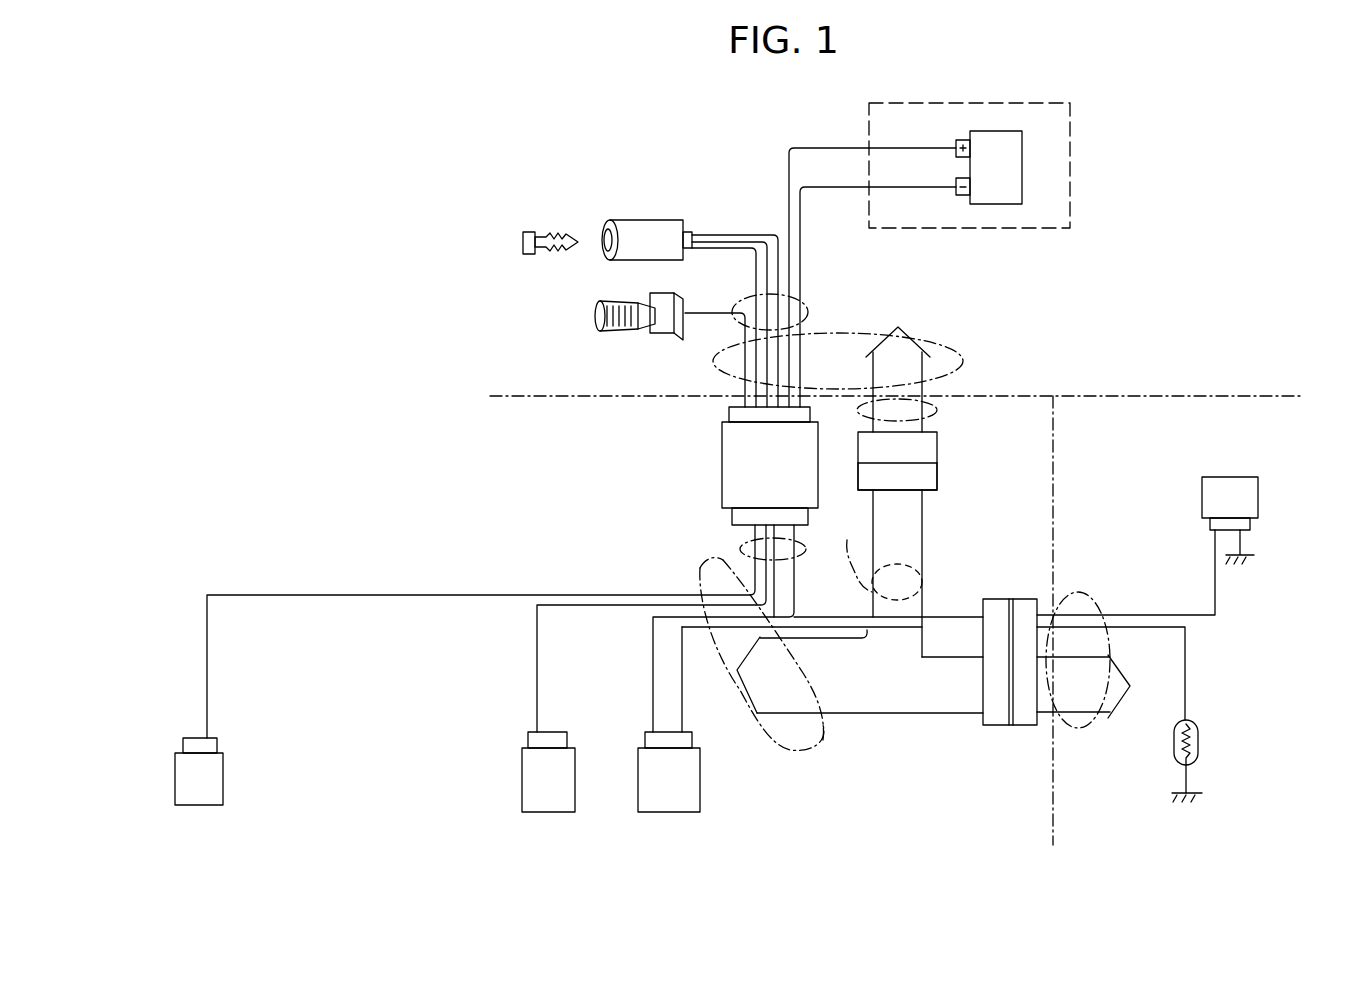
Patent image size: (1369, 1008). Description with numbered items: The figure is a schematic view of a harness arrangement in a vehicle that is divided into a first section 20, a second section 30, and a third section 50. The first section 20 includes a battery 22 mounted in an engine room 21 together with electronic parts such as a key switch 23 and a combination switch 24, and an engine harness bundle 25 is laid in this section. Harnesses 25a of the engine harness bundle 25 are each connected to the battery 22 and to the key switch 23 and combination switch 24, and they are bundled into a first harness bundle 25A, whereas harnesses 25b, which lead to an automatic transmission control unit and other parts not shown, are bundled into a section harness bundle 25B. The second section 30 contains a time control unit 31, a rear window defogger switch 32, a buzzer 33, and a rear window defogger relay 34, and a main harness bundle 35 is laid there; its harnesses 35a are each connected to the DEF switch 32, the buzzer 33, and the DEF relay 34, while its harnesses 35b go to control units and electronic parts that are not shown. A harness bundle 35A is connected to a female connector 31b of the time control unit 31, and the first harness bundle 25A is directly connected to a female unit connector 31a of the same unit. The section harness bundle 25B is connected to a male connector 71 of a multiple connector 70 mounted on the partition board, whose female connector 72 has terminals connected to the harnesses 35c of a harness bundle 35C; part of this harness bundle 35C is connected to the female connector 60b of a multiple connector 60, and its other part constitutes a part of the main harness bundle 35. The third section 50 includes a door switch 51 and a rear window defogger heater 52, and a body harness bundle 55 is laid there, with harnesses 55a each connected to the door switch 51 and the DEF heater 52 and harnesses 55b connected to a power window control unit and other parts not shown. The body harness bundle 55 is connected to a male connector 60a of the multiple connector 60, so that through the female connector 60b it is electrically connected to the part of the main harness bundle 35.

The first section 20 is at (1094, 276).
The engine room 21 is at (1072, 162).
The battery 22 is at (1003, 131).
The key switch 23 is at (647, 226).
The combination switch 24 is at (590, 313).
The engine harness bundle 25 is at (958, 353).
The harnesses 25a is at (728, 237).
The first harness bundle 25A is at (810, 308).
The harnesses 25b is at (913, 337).
The section harness bundle 25B is at (957, 393).
The second section 30 is at (1032, 499).
The time control unit 31 is at (722, 470).
The female connector 31a is at (729, 413).
The female connector 31b is at (732, 516).
The rear window defogger switch 32 is at (227, 790).
The buzzer 33 is at (553, 812).
The rear window defogger relay 34 is at (655, 813).
The main harness bundle 35 is at (825, 750).
The harnesses 35a is at (385, 593).
The harness bundle 35A is at (740, 547).
The harnesses 35b is at (815, 638).
The harness bundle 35C is at (846, 551).
The harnesses 35c is at (922, 523).
The third section 50 is at (1135, 492).
The door switch 51 is at (1215, 477).
The rear window defogger heater 52 is at (1200, 738).
The body harness bundle 55 is at (1070, 730).
The harnesses 55a is at (1142, 630).
The harnesses 55b is at (1103, 717).
The multiple connector 60 is at (994, 725).
The male connector 60a is at (1027, 600).
The female connector 60b is at (993, 610).
The multiple connector 70 is at (937, 435).
The male connector 71 is at (922, 450).
The female connector 72 is at (922, 476).